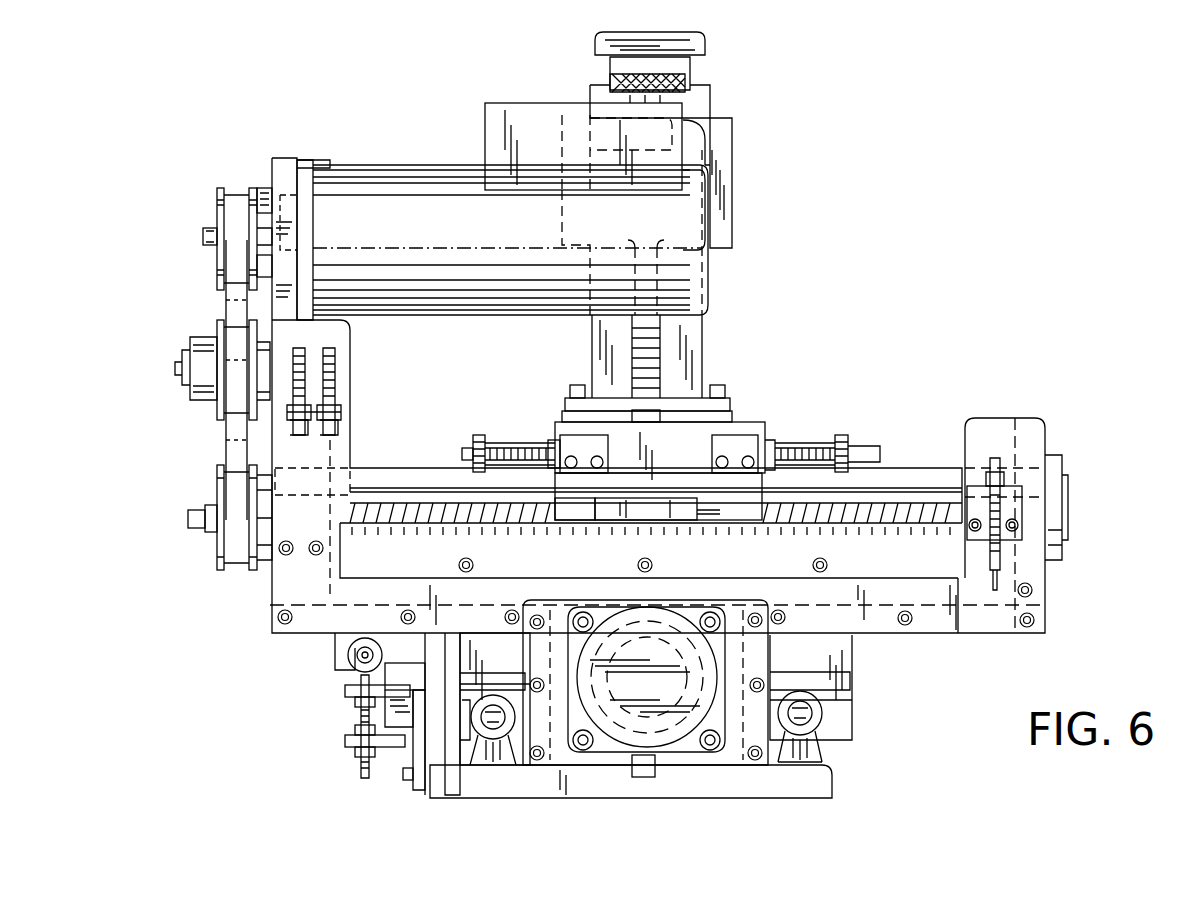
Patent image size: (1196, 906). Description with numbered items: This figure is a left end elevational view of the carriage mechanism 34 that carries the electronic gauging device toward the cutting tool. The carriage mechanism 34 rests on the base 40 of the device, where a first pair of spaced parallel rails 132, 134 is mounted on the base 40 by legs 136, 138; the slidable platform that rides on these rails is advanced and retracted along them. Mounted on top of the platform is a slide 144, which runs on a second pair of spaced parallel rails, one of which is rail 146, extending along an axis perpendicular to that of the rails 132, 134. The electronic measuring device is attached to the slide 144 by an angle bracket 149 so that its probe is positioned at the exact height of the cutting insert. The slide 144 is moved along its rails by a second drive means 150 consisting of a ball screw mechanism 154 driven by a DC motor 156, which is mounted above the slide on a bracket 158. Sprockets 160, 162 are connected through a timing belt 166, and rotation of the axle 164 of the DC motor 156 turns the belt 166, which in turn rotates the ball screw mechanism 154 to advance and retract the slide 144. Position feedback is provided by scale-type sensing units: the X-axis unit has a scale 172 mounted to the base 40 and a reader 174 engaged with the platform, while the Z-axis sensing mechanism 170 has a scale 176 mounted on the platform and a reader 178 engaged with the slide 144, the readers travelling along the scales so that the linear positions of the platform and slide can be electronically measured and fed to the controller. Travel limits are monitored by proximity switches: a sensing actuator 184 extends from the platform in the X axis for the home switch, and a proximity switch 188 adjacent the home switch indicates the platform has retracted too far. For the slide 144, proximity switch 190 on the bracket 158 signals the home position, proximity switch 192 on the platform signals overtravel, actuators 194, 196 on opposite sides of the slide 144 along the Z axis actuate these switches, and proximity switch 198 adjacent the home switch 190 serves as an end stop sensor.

The carriage mechanism 34 is at (878, 638).
The base 40 is at (606, 782).
The rail 132 is at (488, 732).
The rail 134 is at (803, 711).
The leg 136 is at (498, 742).
The leg 138 is at (812, 752).
The slide 144 is at (665, 465).
The rail 146 is at (420, 481).
The angle bracket 149 is at (693, 331).
The second drive means 150 is at (206, 306).
The ball screw mechanism 154 is at (393, 505).
The DC motor 156 is at (397, 165).
The bracket 158 is at (340, 440).
The sprocket 160 is at (212, 272).
The sprocket 162 is at (217, 487).
The axle 164 is at (262, 212).
The timing belt 166 is at (226, 441).
The sensing mechanism 170 is at (679, 507).
The scale 172 is at (398, 720).
The reader 174 is at (400, 670).
The scale 176 is at (606, 577).
The reader 178 is at (672, 528).
The sensing actuator 184 is at (348, 660).
The proximity switch 188 is at (356, 714).
The proximity switch 190 is at (336, 360).
The proximity switch 192 is at (995, 462).
The actuator 194 is at (485, 445).
The actuator 196 is at (843, 440).
The proximity switch 198 is at (302, 350).